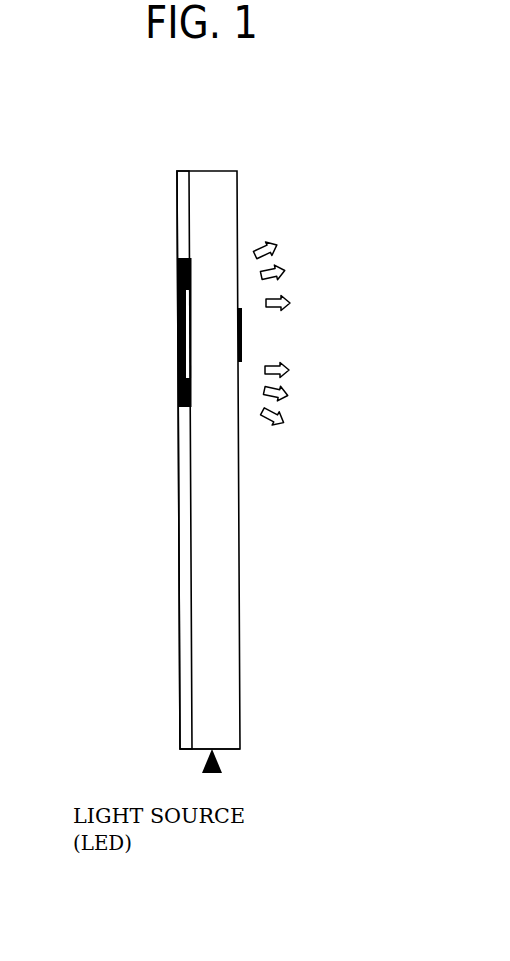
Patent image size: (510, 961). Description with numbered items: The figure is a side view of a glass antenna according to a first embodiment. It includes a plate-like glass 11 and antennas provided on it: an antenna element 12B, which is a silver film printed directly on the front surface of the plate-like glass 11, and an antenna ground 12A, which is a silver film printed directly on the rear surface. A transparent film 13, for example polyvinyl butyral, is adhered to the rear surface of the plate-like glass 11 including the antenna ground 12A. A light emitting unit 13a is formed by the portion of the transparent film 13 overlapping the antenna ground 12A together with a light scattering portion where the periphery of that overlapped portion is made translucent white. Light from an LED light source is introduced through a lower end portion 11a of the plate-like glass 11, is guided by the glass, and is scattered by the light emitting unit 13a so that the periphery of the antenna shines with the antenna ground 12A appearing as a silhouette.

The plate-like glass 11 is at (200, 171).
The lower end portion 11a is at (228, 750).
The antenna ground 12A is at (186, 342).
The antenna element 12B is at (242, 335).
The transparent film 13 is at (180, 665).
The light emitting unit 13a is at (178, 280).